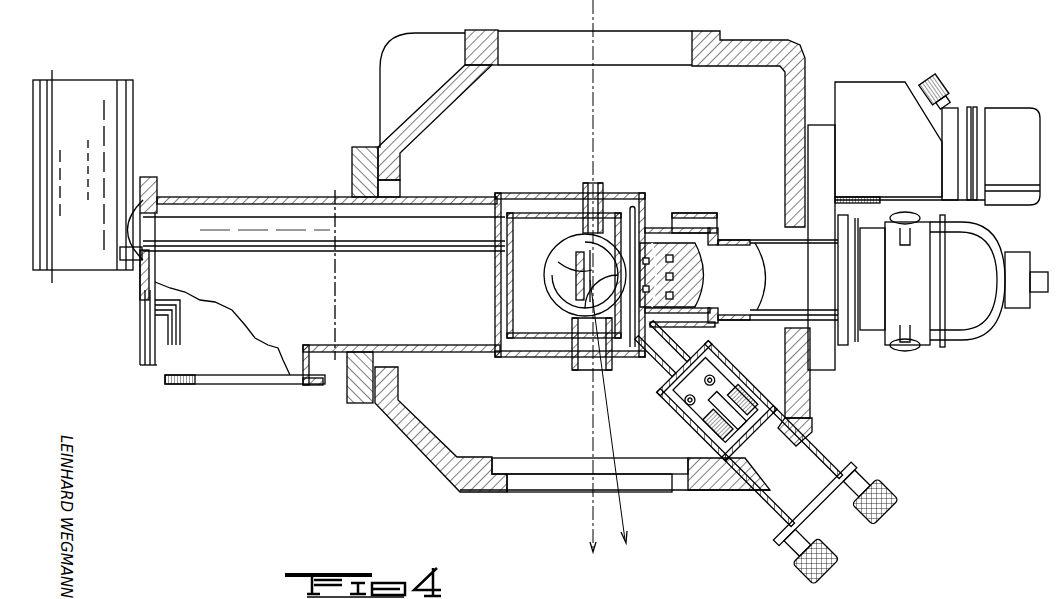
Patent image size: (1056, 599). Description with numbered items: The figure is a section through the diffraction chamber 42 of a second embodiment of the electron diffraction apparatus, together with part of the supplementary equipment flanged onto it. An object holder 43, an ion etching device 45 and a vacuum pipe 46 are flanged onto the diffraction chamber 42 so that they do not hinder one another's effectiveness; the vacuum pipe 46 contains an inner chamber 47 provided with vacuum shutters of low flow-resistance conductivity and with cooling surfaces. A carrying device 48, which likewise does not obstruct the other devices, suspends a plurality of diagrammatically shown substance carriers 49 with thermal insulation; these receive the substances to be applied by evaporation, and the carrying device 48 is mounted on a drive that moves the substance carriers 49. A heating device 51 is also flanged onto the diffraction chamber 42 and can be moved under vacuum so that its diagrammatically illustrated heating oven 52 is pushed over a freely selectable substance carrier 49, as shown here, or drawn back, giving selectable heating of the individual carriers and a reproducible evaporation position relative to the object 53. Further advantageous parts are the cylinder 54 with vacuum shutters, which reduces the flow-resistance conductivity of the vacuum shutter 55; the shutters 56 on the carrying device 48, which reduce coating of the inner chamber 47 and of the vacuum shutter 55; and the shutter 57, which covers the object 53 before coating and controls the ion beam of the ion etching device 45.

The diffraction chamber 42 is at (790, 42).
The object holder 43 is at (575, 300).
The ion etching device 45 is at (828, 133).
The vacuum pipe 46 is at (250, 198).
The inner chamber 47 is at (560, 200).
The carrying device 48 is at (703, 380).
The substance carriers 49 is at (744, 366).
The heating device 51 is at (818, 470).
The heating oven 52 is at (746, 394).
The object 53 is at (590, 280).
The cylinder 54 is at (707, 431).
The vacuum shutter 55 is at (660, 371).
The shutters 56 is at (686, 407).
The shutter 57 is at (633, 250).